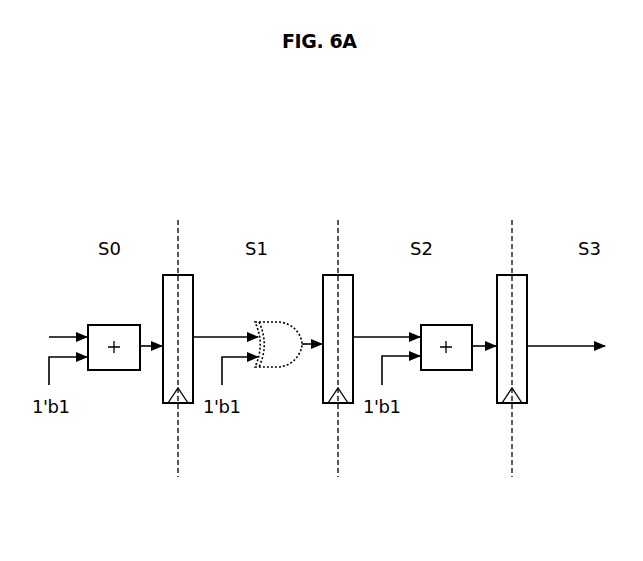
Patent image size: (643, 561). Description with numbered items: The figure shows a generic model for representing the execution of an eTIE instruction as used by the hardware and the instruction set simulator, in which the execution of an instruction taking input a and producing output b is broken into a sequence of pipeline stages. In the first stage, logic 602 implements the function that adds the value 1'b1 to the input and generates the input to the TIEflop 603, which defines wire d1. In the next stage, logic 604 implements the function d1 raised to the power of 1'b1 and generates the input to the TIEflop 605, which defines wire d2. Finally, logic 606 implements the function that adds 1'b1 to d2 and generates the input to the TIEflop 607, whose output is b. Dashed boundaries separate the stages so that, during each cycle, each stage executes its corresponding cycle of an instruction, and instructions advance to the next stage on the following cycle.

The logic 602 is at (113, 370).
The TIEflop 603 is at (178, 403).
The logic 604 is at (278, 367).
The TIEflop 605 is at (338, 403).
The logic 606 is at (445, 370).
The TIEflop 607 is at (512, 403).